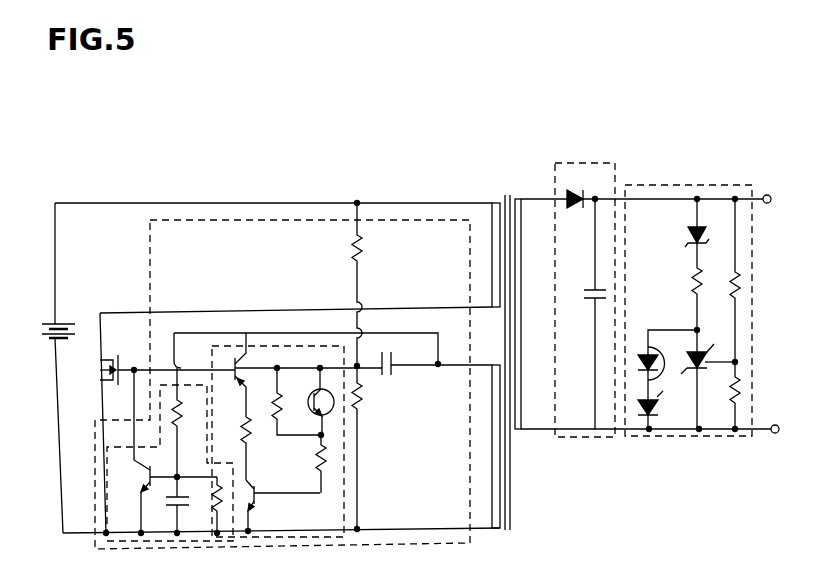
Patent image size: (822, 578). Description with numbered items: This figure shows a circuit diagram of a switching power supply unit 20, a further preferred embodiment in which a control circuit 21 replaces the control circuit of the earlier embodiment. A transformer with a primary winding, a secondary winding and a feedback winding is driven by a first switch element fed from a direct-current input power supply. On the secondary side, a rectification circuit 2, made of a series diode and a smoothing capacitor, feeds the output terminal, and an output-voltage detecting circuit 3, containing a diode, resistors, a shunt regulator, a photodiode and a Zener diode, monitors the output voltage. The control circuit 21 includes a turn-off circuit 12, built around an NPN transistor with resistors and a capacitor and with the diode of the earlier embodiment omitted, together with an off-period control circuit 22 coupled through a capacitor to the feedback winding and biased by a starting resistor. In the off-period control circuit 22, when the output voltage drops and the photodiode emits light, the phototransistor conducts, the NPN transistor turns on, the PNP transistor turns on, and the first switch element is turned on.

The switching power supply unit 20 is at (265, 152).
The control circuit 21 is at (205, 220).
The turn-off circuit 12 is at (190, 380).
The off-period control circuit 22 is at (258, 346).
The rectification circuit 2 is at (588, 163).
The output-voltage detecting circuit 3 is at (678, 185).